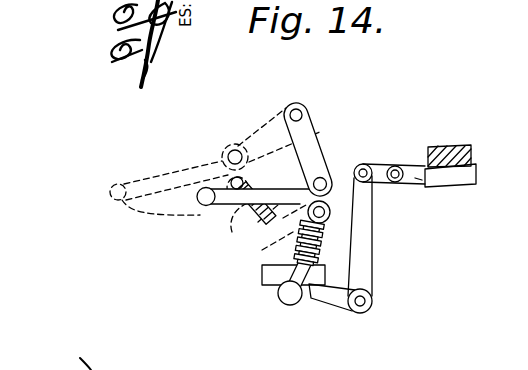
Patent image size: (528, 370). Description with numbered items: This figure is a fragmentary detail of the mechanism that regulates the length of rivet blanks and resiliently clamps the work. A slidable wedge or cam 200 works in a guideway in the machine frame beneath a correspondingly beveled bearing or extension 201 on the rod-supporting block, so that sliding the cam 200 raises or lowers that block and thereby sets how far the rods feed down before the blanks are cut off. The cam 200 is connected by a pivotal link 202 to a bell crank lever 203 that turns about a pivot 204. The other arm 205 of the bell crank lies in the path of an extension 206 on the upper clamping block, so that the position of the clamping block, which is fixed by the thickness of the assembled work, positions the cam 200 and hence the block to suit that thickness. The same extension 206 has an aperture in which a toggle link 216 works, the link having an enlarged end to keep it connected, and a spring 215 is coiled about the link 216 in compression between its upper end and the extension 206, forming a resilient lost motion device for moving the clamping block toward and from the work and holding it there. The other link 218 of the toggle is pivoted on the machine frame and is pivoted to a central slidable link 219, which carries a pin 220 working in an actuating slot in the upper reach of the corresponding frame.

The slidable wedge or cam 200 is at (478, 178).
The beveled bearing or extension 201 is at (472, 153).
The pivotal link 202 is at (383, 184).
The bell crank lever 203 is at (374, 252).
The pivot 204 is at (369, 304).
The other arm of bell crank 205 is at (313, 298).
The extension on clamping block 206 is at (262, 276).
The spring 215 is at (278, 257).
The toggle link 216 is at (283, 245).
The other toggle link 218 is at (322, 132).
The central slidable link 219 is at (265, 192).
The pin 220 is at (208, 203).